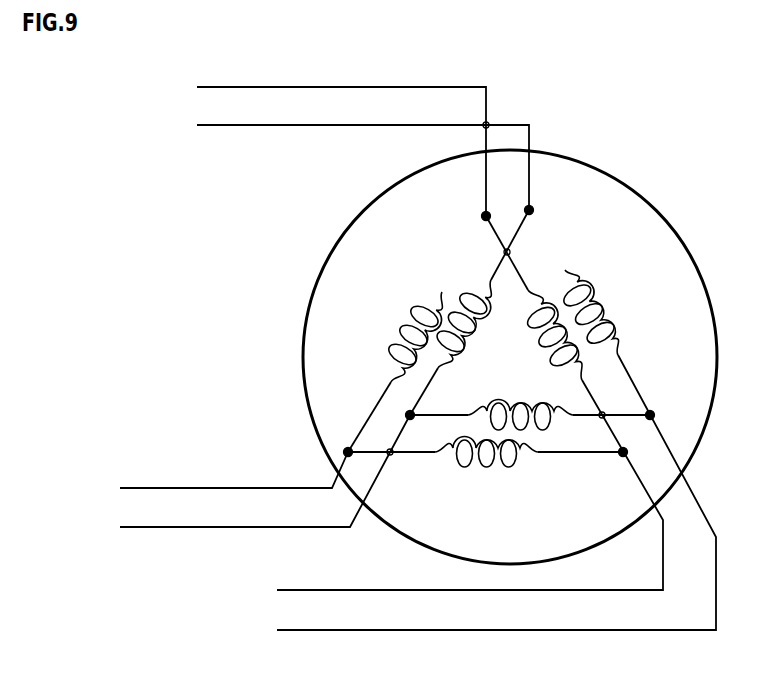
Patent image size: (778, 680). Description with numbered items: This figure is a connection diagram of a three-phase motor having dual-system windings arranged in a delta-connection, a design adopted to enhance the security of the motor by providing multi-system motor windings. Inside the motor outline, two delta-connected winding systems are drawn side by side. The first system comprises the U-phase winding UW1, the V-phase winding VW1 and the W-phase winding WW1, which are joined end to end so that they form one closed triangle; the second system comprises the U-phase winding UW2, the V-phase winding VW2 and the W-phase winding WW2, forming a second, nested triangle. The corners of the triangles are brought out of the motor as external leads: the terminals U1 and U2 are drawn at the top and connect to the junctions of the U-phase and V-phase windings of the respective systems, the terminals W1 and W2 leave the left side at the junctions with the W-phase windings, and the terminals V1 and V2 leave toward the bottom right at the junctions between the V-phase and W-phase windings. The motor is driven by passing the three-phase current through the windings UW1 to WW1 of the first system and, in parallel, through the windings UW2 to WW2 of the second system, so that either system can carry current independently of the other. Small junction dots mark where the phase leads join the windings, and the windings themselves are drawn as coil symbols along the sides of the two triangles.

The U-phase terminal 1 U1 is at (322, 145).
The U-phase terminal 2 U2 is at (343, 161).
The V-phase terminal 1 V1 is at (450, 493).
The V-phase terminal 2 V2 is at (476, 500).
The W-phase terminal 1 W1 is at (214, 477).
The W-phase terminal 2 W2 is at (245, 478).
The U-phase winding UW1 is at (407, 314).
The U-phase winding UW2 is at (483, 334).
The V-phase winding VW1 is at (550, 353).
The V-phase winding VW2 is at (608, 303).
The W-phase winding WW1 is at (500, 468).
The W-phase winding WW2 is at (519, 396).